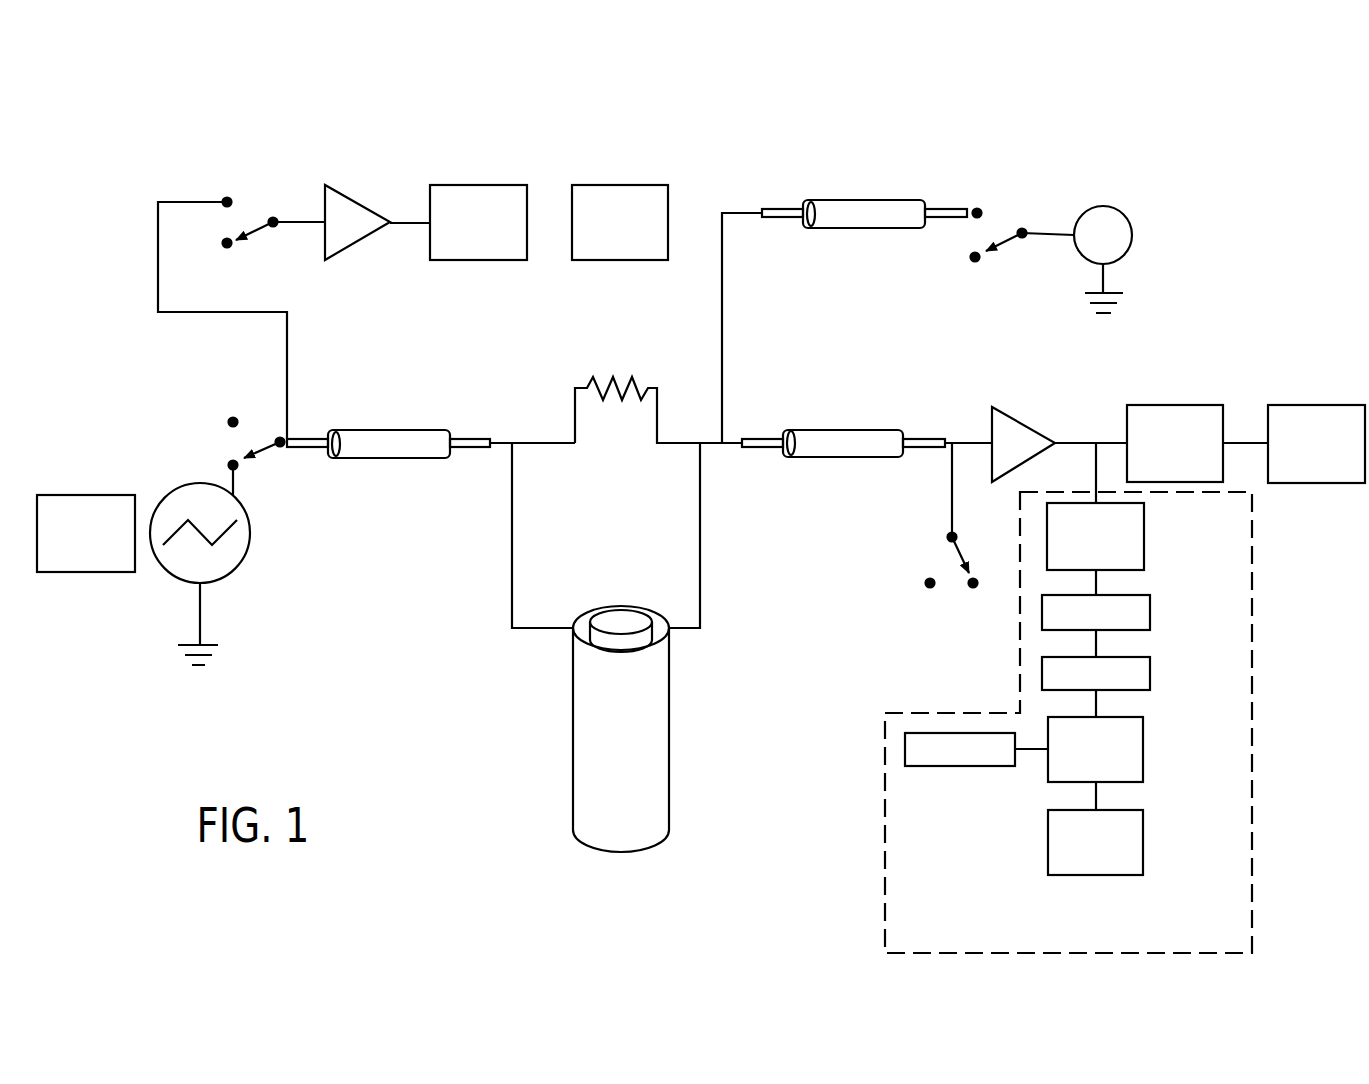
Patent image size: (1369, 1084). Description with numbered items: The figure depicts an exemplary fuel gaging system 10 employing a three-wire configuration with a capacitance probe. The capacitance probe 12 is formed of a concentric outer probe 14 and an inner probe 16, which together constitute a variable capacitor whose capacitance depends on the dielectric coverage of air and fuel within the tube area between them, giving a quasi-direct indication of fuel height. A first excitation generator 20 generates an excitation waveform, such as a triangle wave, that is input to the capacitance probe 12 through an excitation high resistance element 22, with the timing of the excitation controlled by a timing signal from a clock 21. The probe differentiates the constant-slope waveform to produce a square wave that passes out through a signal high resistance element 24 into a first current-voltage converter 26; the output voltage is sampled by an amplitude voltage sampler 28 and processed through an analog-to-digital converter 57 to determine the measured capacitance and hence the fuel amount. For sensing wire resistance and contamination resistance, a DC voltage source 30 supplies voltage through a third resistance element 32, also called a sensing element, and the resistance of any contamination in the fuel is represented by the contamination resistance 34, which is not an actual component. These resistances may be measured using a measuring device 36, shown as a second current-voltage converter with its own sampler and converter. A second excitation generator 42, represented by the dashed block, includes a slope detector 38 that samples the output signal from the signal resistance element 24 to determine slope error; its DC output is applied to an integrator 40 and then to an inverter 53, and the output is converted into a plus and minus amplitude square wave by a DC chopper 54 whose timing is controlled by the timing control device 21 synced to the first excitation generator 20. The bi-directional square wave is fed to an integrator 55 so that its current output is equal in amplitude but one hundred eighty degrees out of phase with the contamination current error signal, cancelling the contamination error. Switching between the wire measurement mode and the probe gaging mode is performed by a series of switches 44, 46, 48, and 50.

The fuel gaging system 10 is at (230, 120).
The capacitance probe 12 is at (597, 729).
The outer probe 14 is at (603, 717).
The inner probe 16 is at (635, 643).
The first excitation generator 20 is at (173, 490).
The clock 21 is at (1143, 836).
The excitation high resistance element 22 is at (387, 430).
The signal high resistance element 24 is at (843, 430).
The first current-voltage converter 26 is at (1025, 425).
The amplitude voltage sampler 28 is at (480, 185).
The DC voltage source 30 is at (1100, 206).
The third resistance element 32 is at (863, 200).
The contamination resistance 34 is at (627, 400).
The measuring device 36 is at (363, 206).
The slope detector 38 is at (1144, 533).
The integrator 40 is at (1150, 613).
The second excitation generator 42 is at (885, 817).
The switch 44 is at (257, 227).
The switch 46 is at (1000, 243).
The switch 48 is at (260, 440).
The switch 50 is at (947, 543).
The inverter 53 is at (1150, 670).
The DC chopper 54 is at (1143, 745).
The integrator 55 is at (955, 766).
The analog-to-digital converter 57 is at (622, 185).